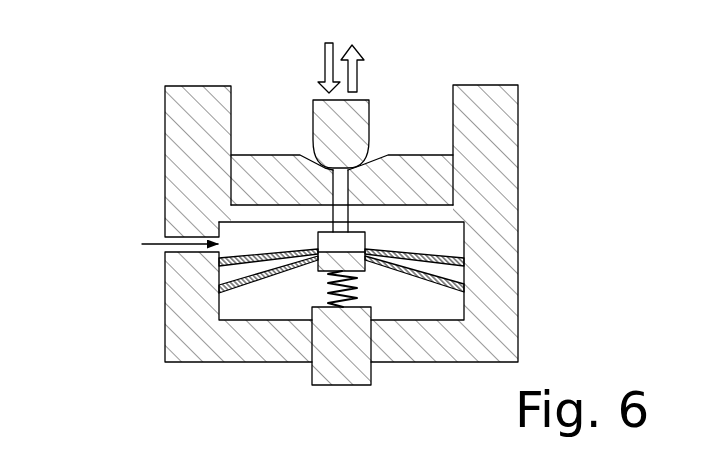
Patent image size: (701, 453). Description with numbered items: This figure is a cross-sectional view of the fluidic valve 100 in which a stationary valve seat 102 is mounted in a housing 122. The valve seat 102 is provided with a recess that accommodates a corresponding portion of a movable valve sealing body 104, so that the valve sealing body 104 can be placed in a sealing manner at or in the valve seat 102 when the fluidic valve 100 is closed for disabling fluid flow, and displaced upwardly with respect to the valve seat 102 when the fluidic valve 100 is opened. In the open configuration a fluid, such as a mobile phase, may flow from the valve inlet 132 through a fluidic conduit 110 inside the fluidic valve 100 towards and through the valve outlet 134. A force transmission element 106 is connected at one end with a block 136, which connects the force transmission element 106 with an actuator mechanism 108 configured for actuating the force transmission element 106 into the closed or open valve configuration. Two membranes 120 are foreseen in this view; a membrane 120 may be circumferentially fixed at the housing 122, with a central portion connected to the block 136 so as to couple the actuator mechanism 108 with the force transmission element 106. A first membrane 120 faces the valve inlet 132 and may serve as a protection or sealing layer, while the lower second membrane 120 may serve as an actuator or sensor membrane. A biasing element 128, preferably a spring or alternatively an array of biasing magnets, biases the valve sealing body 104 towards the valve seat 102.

The fluidic valve 100 is at (324, 229).
The valve seat 102 is at (422, 175).
The valve sealing body 104 is at (360, 128).
The force transmission element 106 is at (341, 186).
The actuator mechanism 108 is at (245, 288).
The fluidic conduit 110 is at (350, 192).
The membrane 120 is at (450, 257).
The housing 122 is at (182, 173).
The biasing element 128 is at (328, 288).
The valve inlet 132 is at (163, 251).
The valve outlet 134 is at (364, 88).
The block 136 is at (350, 243).